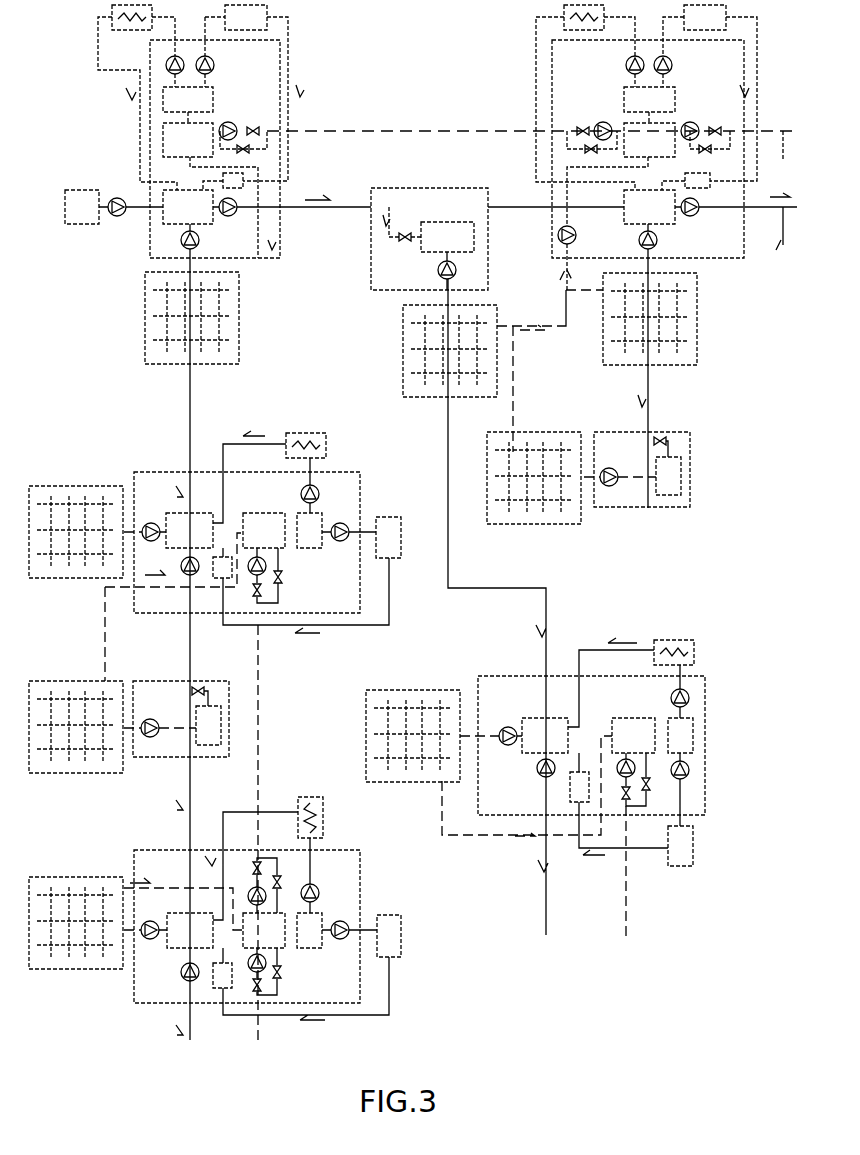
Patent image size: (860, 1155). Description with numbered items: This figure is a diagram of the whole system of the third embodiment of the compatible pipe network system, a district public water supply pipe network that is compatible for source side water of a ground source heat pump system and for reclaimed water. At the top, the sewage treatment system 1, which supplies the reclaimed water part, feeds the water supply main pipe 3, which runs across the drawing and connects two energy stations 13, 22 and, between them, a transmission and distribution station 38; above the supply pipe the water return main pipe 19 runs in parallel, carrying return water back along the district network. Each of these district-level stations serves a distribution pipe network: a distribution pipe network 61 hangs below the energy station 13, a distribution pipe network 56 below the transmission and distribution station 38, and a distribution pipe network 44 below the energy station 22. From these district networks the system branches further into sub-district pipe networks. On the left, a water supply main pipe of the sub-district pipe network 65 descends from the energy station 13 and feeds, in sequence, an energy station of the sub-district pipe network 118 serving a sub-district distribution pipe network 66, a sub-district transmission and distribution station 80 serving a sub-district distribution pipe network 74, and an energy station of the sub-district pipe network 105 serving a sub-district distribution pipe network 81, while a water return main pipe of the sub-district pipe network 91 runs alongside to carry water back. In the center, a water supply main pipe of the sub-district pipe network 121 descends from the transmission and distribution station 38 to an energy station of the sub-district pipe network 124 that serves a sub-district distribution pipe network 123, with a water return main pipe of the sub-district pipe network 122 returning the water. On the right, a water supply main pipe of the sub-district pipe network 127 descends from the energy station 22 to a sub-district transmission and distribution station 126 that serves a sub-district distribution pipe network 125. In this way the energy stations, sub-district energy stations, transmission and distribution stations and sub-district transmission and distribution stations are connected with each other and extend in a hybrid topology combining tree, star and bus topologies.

The sewage treatment system 1 is at (83, 188).
The water supply main pipe 3 is at (137, 203).
The energy station 13 is at (147, 233).
The water return main pipe 19 is at (333, 130).
The energy station 22 is at (710, 260).
The transmission and distribution station 38 is at (402, 187).
The distribution pipe network 61 is at (145, 300).
The distribution pipe network 56 is at (402, 370).
The distribution pipe network 44 is at (602, 337).
The water supply main pipe of sub-district pipe network 127 is at (652, 417).
The water supply main pipe of sub-district pipe network 65 is at (188, 453).
The sub-district distribution pipe network 66 is at (75, 487).
The energy station of sub-district pipe network 118 is at (137, 472).
The water supply main pipe of sub-district pipe network 121 is at (447, 505).
The sub-district distribution pipe network 125 is at (562, 527).
The sub-district transmission and distribution station 126 is at (623, 507).
The sub-district distribution pipe network 74 is at (82, 682).
The sub-district transmission and distribution station 80 is at (168, 760).
The water return main pipe of sub-district pipe network 91 is at (258, 732).
The sub-district distribution pipe network 81 is at (95, 877).
The energy station of sub-district pipe network 105 is at (365, 880).
The sub-district distribution pipe network 123 is at (400, 687).
The energy station of sub-district pipe network 124 is at (505, 675).
The water return main pipe of sub-district pipe network 122 is at (636, 880).